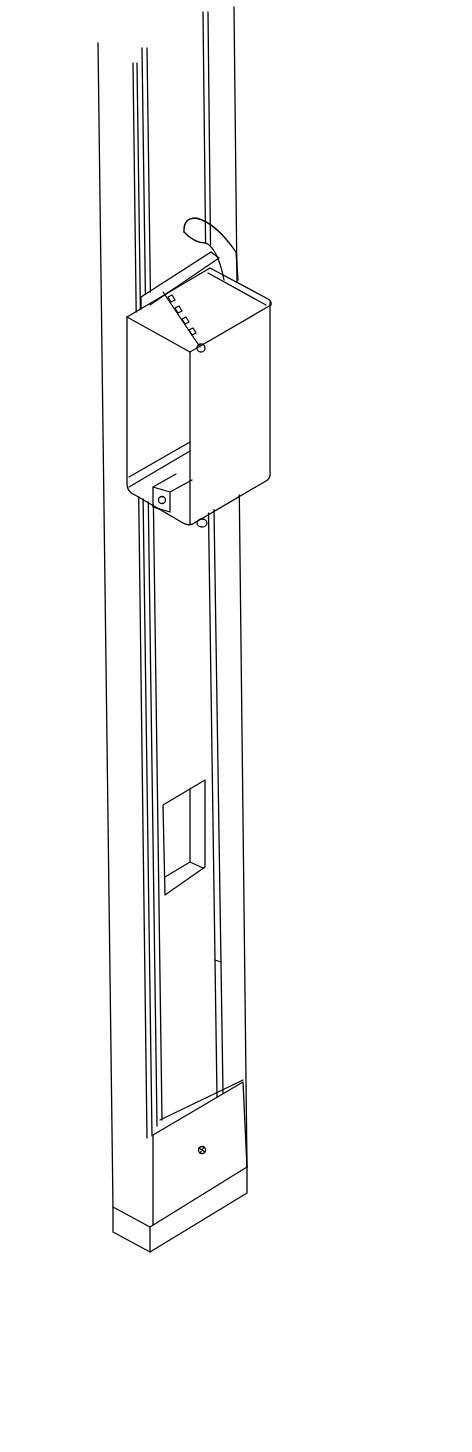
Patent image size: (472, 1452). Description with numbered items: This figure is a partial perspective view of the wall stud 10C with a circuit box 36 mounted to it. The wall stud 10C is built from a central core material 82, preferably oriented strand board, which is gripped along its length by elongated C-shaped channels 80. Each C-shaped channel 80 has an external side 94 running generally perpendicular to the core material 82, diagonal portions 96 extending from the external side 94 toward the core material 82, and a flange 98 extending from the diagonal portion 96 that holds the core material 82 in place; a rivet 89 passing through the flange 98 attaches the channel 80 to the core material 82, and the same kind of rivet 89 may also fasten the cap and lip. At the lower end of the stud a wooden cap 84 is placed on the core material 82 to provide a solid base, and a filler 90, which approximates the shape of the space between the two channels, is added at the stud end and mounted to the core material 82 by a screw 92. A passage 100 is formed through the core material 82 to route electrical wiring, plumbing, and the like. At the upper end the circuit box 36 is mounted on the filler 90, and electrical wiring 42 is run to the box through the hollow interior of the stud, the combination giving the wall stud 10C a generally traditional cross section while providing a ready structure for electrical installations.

The wall stud 10C is at (282, 691).
The C-shaped channel 80 is at (116, 257).
The core material 82 is at (187, 742).
The rivet 89 is at (213, 585).
The passage 100 is at (180, 877).
The wooden cap 84 is at (201, 1222).
The filler 90 is at (168, 280).
The screw 92 is at (207, 1146).
The circuit box 36 is at (163, 400).
The external side 94 is at (115, 298).
The electrical wiring 42 is at (246, 132).
The diagonal portion 96 is at (140, 193).
The flange 98 is at (205, 164).